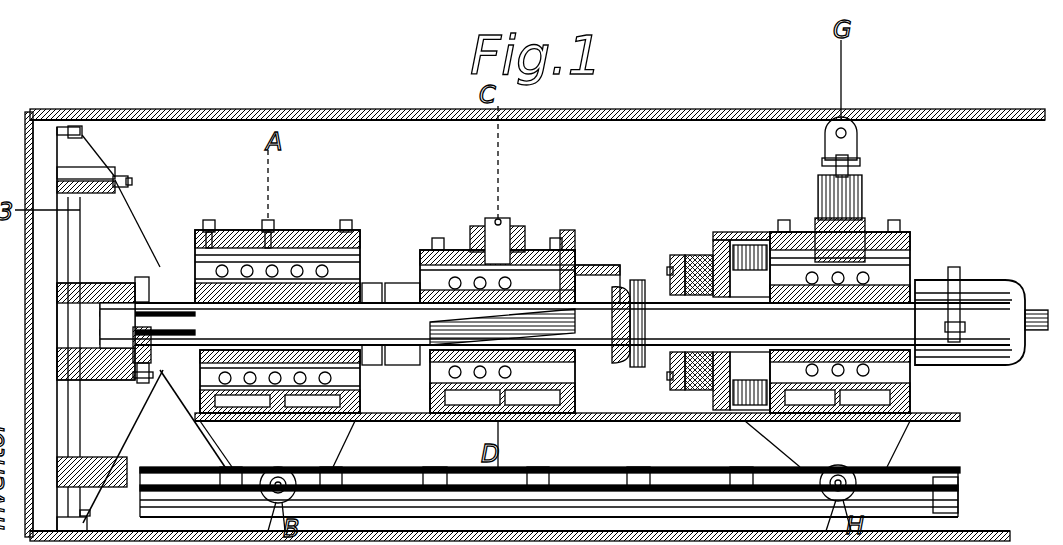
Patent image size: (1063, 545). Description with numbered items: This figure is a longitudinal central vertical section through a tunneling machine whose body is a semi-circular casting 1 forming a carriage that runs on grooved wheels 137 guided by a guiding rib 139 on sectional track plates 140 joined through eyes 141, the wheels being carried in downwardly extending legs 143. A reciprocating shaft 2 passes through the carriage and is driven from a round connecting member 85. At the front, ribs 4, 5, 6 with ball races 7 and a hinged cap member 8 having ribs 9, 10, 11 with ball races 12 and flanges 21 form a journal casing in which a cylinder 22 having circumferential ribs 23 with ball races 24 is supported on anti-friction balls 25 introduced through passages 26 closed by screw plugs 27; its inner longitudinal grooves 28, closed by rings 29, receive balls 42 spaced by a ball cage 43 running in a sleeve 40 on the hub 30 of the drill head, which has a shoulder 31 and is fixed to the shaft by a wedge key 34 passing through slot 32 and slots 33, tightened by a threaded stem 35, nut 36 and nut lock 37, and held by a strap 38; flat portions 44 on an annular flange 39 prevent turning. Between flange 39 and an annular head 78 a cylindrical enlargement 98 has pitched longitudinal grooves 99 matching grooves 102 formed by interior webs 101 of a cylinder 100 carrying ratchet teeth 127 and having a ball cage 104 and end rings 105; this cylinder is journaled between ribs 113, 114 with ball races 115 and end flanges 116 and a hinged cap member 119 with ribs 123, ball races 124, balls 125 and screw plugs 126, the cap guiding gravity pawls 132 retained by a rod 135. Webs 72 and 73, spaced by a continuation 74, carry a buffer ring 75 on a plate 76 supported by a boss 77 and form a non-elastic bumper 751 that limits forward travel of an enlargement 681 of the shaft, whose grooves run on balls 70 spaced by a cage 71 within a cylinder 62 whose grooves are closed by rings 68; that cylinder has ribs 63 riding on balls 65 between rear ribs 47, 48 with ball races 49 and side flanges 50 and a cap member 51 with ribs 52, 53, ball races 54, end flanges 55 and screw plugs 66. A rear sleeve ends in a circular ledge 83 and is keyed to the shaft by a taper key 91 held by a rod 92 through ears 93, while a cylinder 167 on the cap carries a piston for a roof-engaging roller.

The casting 1 is at (470, 440).
The shaft 2 is at (555, 324).
The rib 4 is at (228, 420).
The rib 5 is at (238, 430).
The rib 6 is at (300, 430).
The ball race 7 is at (200, 421).
The upper member 8 is at (335, 245).
The rib 9 is at (192, 262).
The rib 10 is at (282, 238).
The rib 11 is at (360, 258).
The ball race 12 is at (305, 245).
The flanges 21 is at (366, 252).
The cylinder 22 is at (356, 240).
The circumferential ribs 23 is at (236, 240).
The ball race 24 is at (185, 372).
The anti-friction balls 25 is at (195, 252).
The passages 26 is at (200, 240).
The screw plug 27 is at (263, 220).
The longitudinal grooves 28 is at (368, 246).
The rings 29 is at (422, 358).
The hub 30 is at (195, 350).
The shoulder 31 is at (152, 265).
The diametric slot 32 is at (136, 333).
The slots 33 is at (135, 370).
The wedge key 34 is at (112, 282).
The threaded stem 35 is at (146, 380).
The nut 36 is at (93, 433).
The nut lock 37 is at (190, 388).
The strap 38 is at (128, 265).
The annular flange 39 is at (401, 286).
The sleeve 40 is at (280, 321).
The balls 42 is at (268, 415).
The ball cage 43 is at (160, 290).
The flat portions 44 is at (362, 320).
The rib 47 is at (793, 416).
The rib 48 is at (910, 412).
The ball races 49 is at (905, 425).
The side flanges 50 is at (768, 421).
The cap member 51 is at (868, 240).
The rib 52 is at (778, 240).
The rib 53 is at (905, 248).
The ball races 54 is at (788, 240).
The end flanges 55 is at (738, 242).
The cylinder 62 is at (862, 200).
The circumferential ribs 63 is at (708, 262).
The anti-friction balls 65 is at (910, 400).
The screw plugs 66 is at (780, 228).
The rings 68 is at (775, 283).
The enlargement 681 is at (741, 323).
The balls 70 is at (945, 328).
The cage 71 is at (872, 307).
The web 72 is at (712, 421).
The web 73 is at (662, 265).
The continuation 74 is at (735, 238).
The buffer ring 75 is at (602, 415).
The non-elastic bumper 751 is at (752, 398).
The plate 76 is at (668, 378).
The boss 77 is at (690, 421).
The annular head 78 is at (625, 360).
The circular ledge 83 is at (945, 372).
The connecting member 85 is at (1025, 340).
The taper key 91 is at (943, 304).
The rod 92 is at (985, 283).
The ears 93 is at (966, 340).
The cylindrical enlargement 98 is at (502, 317).
The longitudinal grooves 99 is at (590, 266).
The cylinder 100 is at (548, 250).
The interior webs 101 is at (593, 397).
The longitudinal grooves 102 is at (462, 335).
The ball cage 104 is at (570, 262).
The rings 105 is at (422, 278).
The rib 113 is at (422, 421).
The rib 114 is at (532, 416).
The ball races 115 is at (575, 425).
The end flanges 116 is at (432, 400).
The cap member 119 is at (545, 224).
The ribs 123 is at (585, 275).
The ball races 124 is at (458, 250).
The anti-friction balls 125 is at (582, 268).
The screw plugs 126 is at (582, 250).
The ratchet teeth 127 is at (452, 421).
The gravity pawls 132 is at (520, 232).
The rod 135 is at (498, 218).
The wheels 137 is at (522, 236).
The guiding rib 139 is at (535, 490).
The track plates 140 is at (960, 512).
The eyes 141 is at (436, 490).
The legs 143 is at (577, 441).
The cylinder 167 is at (820, 200).